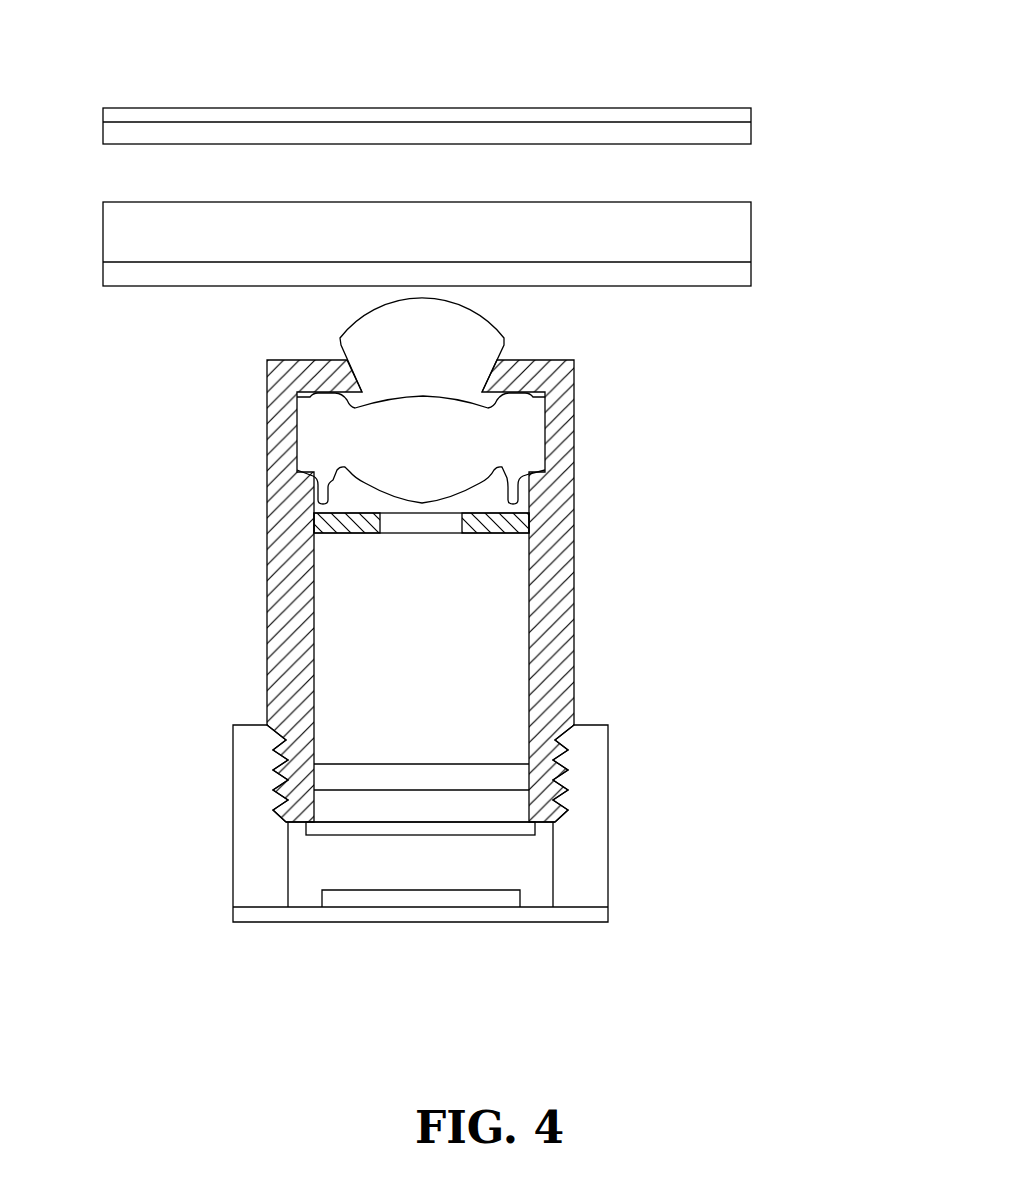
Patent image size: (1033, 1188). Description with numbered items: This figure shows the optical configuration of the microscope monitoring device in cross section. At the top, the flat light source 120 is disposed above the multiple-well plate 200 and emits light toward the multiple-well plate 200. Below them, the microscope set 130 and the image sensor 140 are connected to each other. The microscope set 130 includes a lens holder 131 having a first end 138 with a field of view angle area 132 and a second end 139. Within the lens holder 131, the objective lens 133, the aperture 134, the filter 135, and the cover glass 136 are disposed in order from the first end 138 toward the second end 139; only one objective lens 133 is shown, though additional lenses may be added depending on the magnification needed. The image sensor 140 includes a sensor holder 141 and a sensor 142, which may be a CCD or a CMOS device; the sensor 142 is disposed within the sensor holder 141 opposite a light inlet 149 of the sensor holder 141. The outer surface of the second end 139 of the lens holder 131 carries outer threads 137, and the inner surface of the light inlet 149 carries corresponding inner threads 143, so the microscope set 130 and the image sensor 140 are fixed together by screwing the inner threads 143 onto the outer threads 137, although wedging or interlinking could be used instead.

The flat light source 120 is at (660, 108).
The multiple-well plate 200 is at (752, 242).
The microscope set 130 is at (586, 593).
The lens holder 131 is at (575, 490).
The field of view angle area 132 is at (495, 323).
The objective lens 133 is at (312, 438).
The aperture 134 is at (410, 523).
The filter 135 is at (465, 763).
The cover glass 136 is at (317, 828).
The outer threads 137 is at (562, 773).
The first end 138 is at (334, 356).
The second end 139 is at (550, 830).
The image sensor 140 is at (392, 808).
The sensor holder 141 is at (247, 751).
The sensor 142 is at (377, 897).
The inner threads 143 is at (562, 810).
The light inlet 149 is at (249, 716).